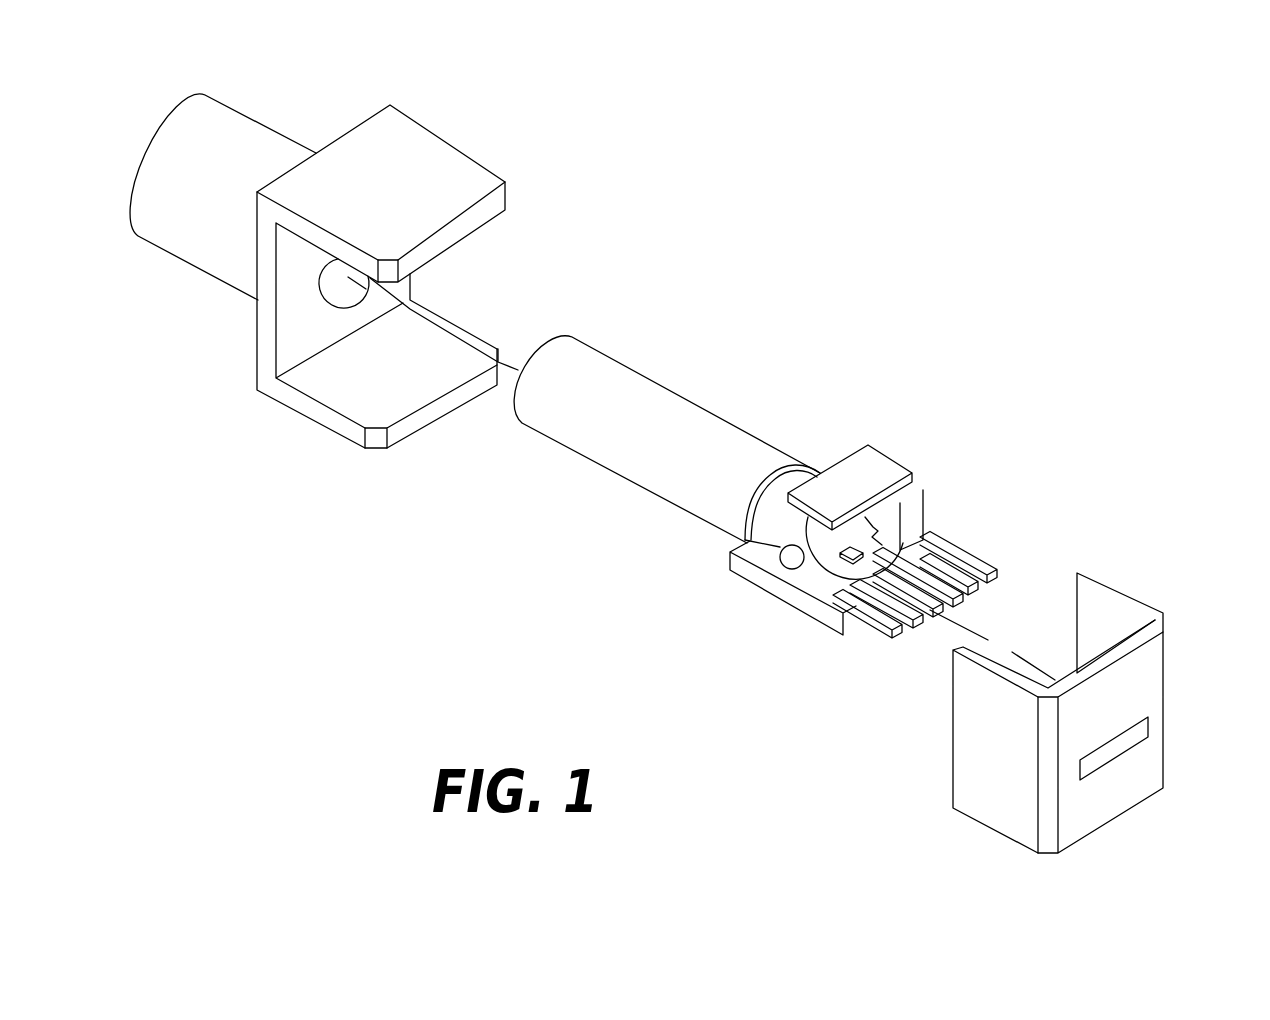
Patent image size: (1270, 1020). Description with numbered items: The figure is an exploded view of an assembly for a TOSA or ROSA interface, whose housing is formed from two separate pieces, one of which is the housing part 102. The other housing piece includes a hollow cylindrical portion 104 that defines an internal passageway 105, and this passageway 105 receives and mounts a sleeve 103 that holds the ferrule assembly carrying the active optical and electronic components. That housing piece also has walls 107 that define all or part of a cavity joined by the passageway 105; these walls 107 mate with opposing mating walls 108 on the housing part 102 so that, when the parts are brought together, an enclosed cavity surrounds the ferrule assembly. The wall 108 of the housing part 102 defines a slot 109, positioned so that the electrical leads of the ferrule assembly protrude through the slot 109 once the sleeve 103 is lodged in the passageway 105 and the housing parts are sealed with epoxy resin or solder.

The housing part 102 is at (1105, 585).
The sleeve 103 is at (685, 393).
The hollow cylindrical portion 104 is at (250, 115).
The internal passageway 105 is at (340, 294).
The walls 107 is at (476, 338).
The mating walls 108 is at (955, 650).
The slot 109 is at (1148, 719).